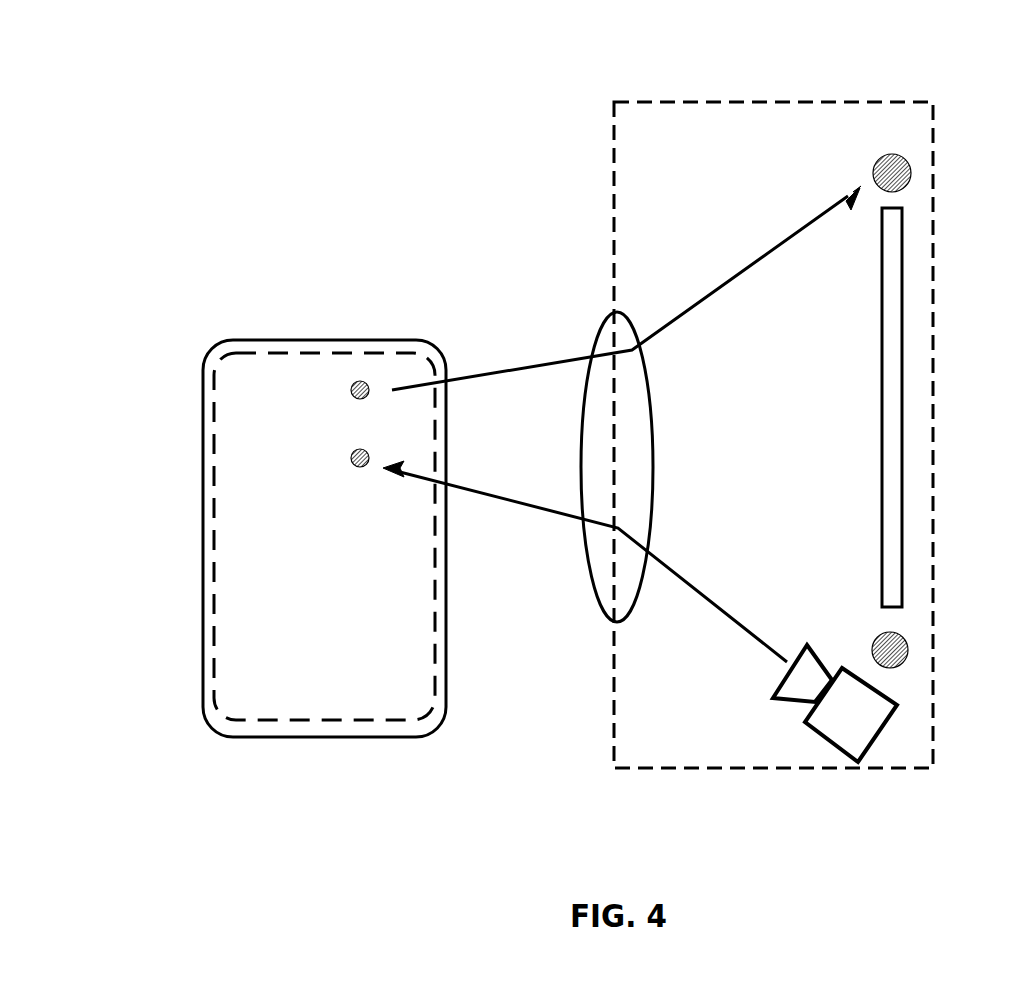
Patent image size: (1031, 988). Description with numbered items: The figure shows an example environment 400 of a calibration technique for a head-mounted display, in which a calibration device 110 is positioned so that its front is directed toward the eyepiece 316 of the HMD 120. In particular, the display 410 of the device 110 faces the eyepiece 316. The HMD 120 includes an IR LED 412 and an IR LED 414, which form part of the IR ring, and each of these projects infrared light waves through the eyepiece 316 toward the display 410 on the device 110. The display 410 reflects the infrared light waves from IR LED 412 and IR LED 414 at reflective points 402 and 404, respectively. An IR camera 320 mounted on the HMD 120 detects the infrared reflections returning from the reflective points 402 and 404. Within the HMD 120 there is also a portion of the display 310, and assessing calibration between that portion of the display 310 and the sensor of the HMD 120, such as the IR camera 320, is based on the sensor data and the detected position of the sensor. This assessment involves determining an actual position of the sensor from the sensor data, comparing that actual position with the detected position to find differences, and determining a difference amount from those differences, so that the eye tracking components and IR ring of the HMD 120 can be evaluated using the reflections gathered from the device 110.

The environment 400 is at (236, 74).
The device 110 is at (204, 360).
The display 410 is at (230, 487).
The reflective point 402 is at (360, 381).
The reflective point 404 is at (360, 448).
The eyepiece 316 is at (598, 603).
The HMD 120 is at (935, 113).
The IR LED 412 is at (907, 185).
The display 310 is at (893, 492).
The IR LED 414 is at (907, 653).
The IR camera 320 is at (840, 748).